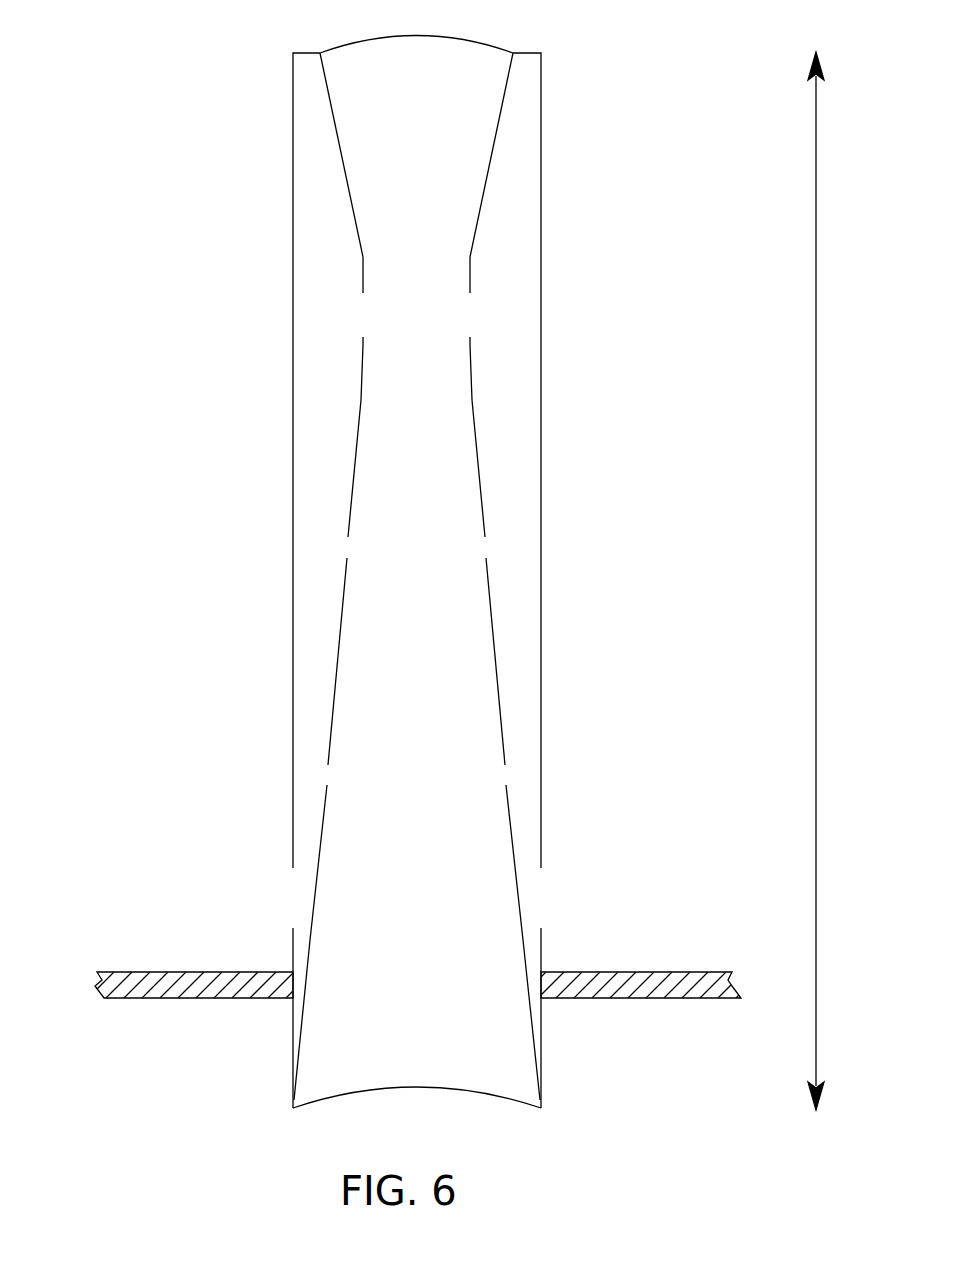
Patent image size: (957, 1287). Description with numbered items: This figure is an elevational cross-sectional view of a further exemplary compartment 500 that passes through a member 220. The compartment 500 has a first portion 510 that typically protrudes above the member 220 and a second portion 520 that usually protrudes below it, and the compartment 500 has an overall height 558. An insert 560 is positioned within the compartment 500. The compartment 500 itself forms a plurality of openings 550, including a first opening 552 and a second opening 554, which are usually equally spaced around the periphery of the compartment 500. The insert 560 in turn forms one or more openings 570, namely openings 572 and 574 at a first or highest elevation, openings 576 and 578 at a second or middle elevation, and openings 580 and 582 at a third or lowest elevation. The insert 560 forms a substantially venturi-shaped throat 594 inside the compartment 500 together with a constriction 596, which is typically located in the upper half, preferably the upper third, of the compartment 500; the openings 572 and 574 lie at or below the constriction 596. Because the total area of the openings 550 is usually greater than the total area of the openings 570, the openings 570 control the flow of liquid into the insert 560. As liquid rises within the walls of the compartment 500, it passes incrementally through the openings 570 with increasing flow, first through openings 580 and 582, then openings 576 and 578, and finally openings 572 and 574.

The compartment 500 is at (412, 572).
The first portion 510 is at (293, 152).
The second portion 520 is at (293, 1050).
The plurality of openings 550 is at (410, 965).
The first opening 552 is at (293, 897).
The second opening 554 is at (541, 899).
The height 558 is at (816, 580).
The insert 560 is at (325, 78).
The openings 570 is at (275, 259).
The opening 572 is at (363, 318).
The opening 574 is at (470, 319).
The opening 576 is at (347, 548).
The opening 578 is at (485, 547).
The opening 580 is at (328, 775).
The opening 582 is at (505, 775).
The venturi-shaped throat 594 is at (361, 400).
The constriction 596 is at (363, 265).
The member 220 is at (105, 972).